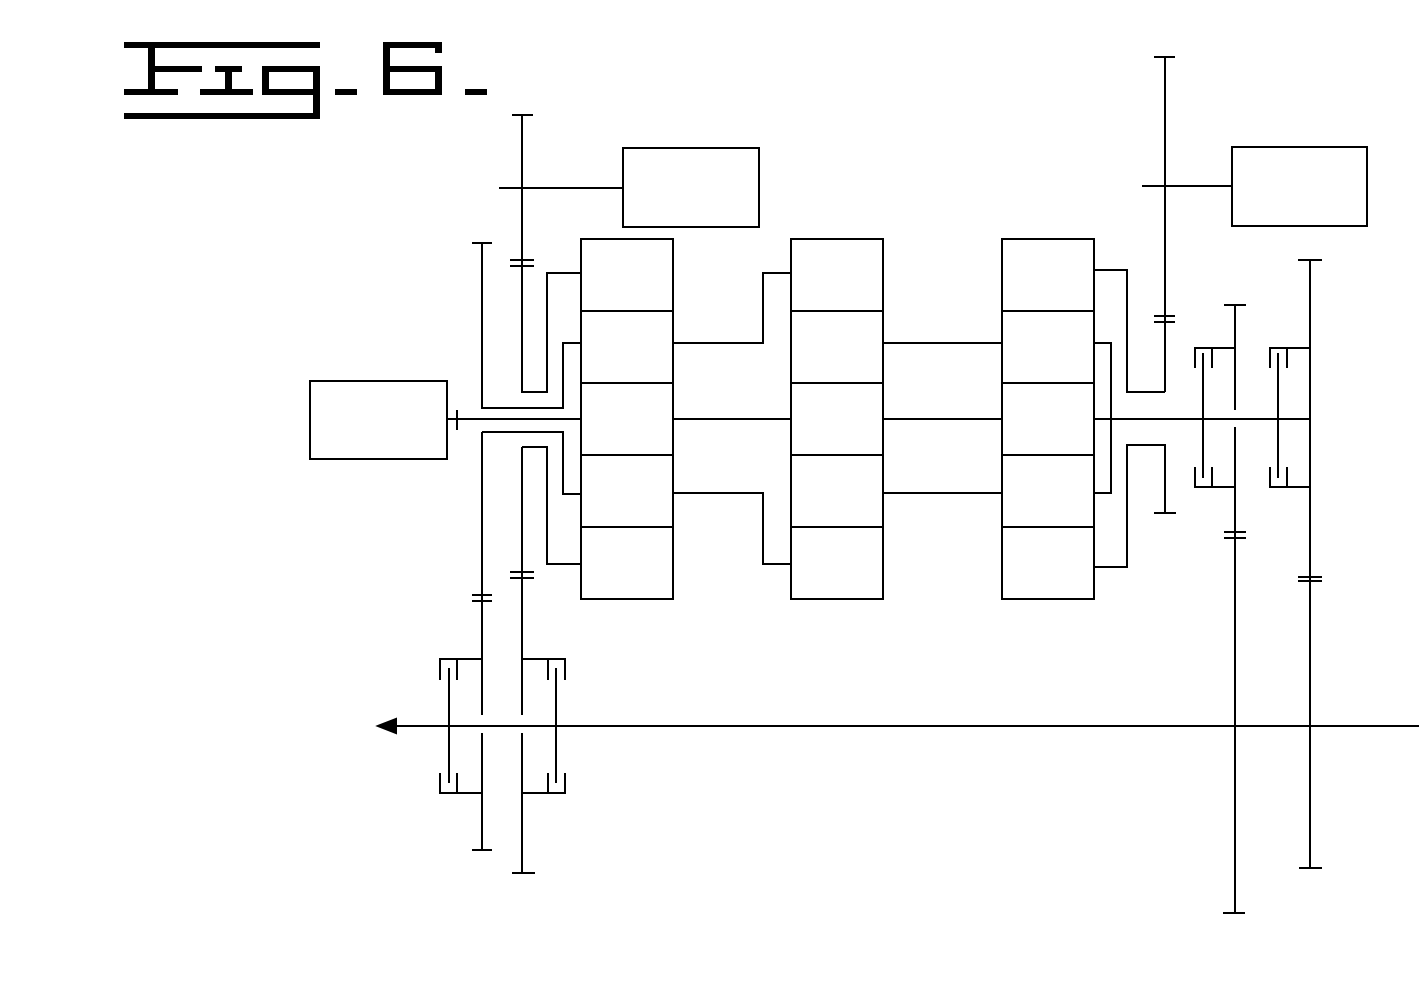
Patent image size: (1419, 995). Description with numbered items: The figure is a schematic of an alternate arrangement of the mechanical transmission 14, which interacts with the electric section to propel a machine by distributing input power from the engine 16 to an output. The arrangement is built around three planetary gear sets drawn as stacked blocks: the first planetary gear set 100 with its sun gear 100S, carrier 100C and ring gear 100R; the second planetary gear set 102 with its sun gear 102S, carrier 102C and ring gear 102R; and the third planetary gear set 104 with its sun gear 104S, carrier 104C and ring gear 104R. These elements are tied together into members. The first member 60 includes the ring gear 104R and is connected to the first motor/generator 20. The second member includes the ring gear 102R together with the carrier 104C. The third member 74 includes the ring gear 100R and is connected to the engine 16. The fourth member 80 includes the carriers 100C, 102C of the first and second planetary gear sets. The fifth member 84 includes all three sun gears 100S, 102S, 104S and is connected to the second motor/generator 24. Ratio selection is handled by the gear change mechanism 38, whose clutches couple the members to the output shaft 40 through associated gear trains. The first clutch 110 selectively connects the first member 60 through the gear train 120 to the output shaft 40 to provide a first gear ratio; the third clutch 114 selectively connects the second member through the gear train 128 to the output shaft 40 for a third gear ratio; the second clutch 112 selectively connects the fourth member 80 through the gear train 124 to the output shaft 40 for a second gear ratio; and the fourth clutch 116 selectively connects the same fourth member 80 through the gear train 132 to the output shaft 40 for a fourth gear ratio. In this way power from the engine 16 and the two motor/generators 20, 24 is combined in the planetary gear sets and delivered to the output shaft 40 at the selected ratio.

The mechanical transmission 14 is at (410, 275).
The engine 16 is at (1320, 147).
The first motor/generator 20 is at (697, 148).
The second motor/generator 24 is at (333, 381).
The gear change mechanism 38 is at (868, 767).
The output shaft 40 is at (832, 727).
The first member 60 is at (573, 273).
The third member 74 is at (1107, 270).
The fourth member 80 is at (1185, 418).
The fifth member 84 is at (465, 408).
The first planetary gear set 100 is at (1005, 466).
The sun gear 100S is at (1002, 435).
The carrier 100C is at (1002, 500).
The ring gear 100R is at (1019, 636).
The second planetary gear set 102 is at (838, 464).
The sun gear 102S is at (883, 403).
The carrier 102C is at (883, 323).
The ring gear 102R is at (829, 628).
The third planetary gear set 104 is at (667, 464).
The sun gear 104S is at (674, 400).
The carrier 104C is at (673, 483).
The ring gear 104R is at (673, 567).
The first clutch 110 is at (553, 797).
The second clutch 112 is at (1206, 488).
The third clutch 114 is at (448, 795).
The fourth clutch 116 is at (1310, 490).
The gear train 120 is at (545, 847).
The gear train 124 is at (1198, 594).
The gear train 128 is at (457, 554).
The gear train 132 is at (1294, 602).